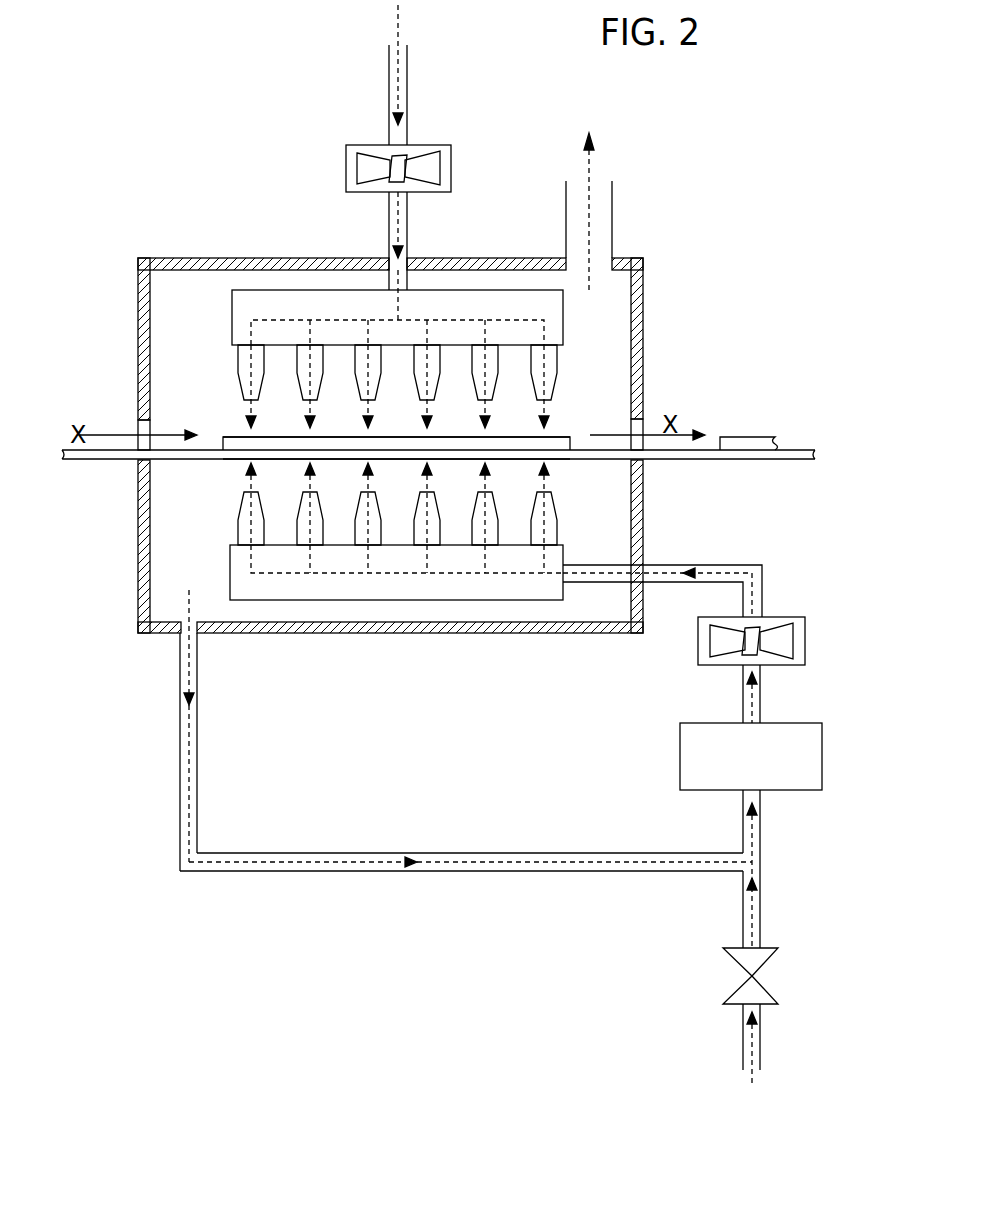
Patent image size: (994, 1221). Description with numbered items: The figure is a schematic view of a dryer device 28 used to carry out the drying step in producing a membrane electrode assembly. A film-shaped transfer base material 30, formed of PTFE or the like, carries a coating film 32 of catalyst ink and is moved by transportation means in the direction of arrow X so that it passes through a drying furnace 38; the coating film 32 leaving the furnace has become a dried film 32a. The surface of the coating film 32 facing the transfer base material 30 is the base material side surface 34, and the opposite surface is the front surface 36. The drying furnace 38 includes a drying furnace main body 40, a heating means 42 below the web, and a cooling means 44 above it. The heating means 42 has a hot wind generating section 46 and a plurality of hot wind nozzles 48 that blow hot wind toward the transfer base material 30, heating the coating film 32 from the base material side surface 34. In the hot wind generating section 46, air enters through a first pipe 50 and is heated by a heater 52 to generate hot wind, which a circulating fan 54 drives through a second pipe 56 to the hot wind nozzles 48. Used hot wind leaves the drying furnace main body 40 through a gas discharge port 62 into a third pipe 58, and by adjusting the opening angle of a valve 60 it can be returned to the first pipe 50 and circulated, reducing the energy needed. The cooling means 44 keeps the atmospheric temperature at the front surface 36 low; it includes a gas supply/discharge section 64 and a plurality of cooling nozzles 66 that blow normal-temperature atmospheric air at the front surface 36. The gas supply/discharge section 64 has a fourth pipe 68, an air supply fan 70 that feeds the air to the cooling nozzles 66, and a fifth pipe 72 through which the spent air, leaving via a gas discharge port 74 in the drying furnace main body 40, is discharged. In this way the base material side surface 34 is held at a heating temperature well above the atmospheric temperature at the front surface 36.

The dryer device 28 is at (184, 93).
The transfer base material 30 is at (87, 462).
The coating film 32 is at (221, 437).
The dried film 32a is at (749, 437).
The base material side surface 34 is at (269, 461).
The front surface 36 is at (279, 437).
The drying furnace 38 is at (211, 230).
The drying furnace main body 40 is at (253, 258).
The heating means 42 is at (796, 513).
The cooling means 44 is at (706, 258).
The hot wind generating section 46 is at (774, 599).
The hot wind nozzles 48 is at (569, 510).
The first pipe 50 is at (761, 915).
The heater 52 is at (680, 745).
The circulating fan 54 is at (790, 666).
The second pipe 56 is at (674, 583).
The third pipe 58 is at (200, 728).
The valve 60 is at (737, 964).
The gas discharge port 62 is at (177, 622).
The gas supply/discharge section 64 is at (634, 247).
The cooling nozzles 66 is at (560, 356).
The fourth pipe 68 is at (409, 214).
The air supply fan 70 is at (452, 164).
The fifth pipe 72 is at (614, 197).
The gas discharge port 74 is at (566, 262).